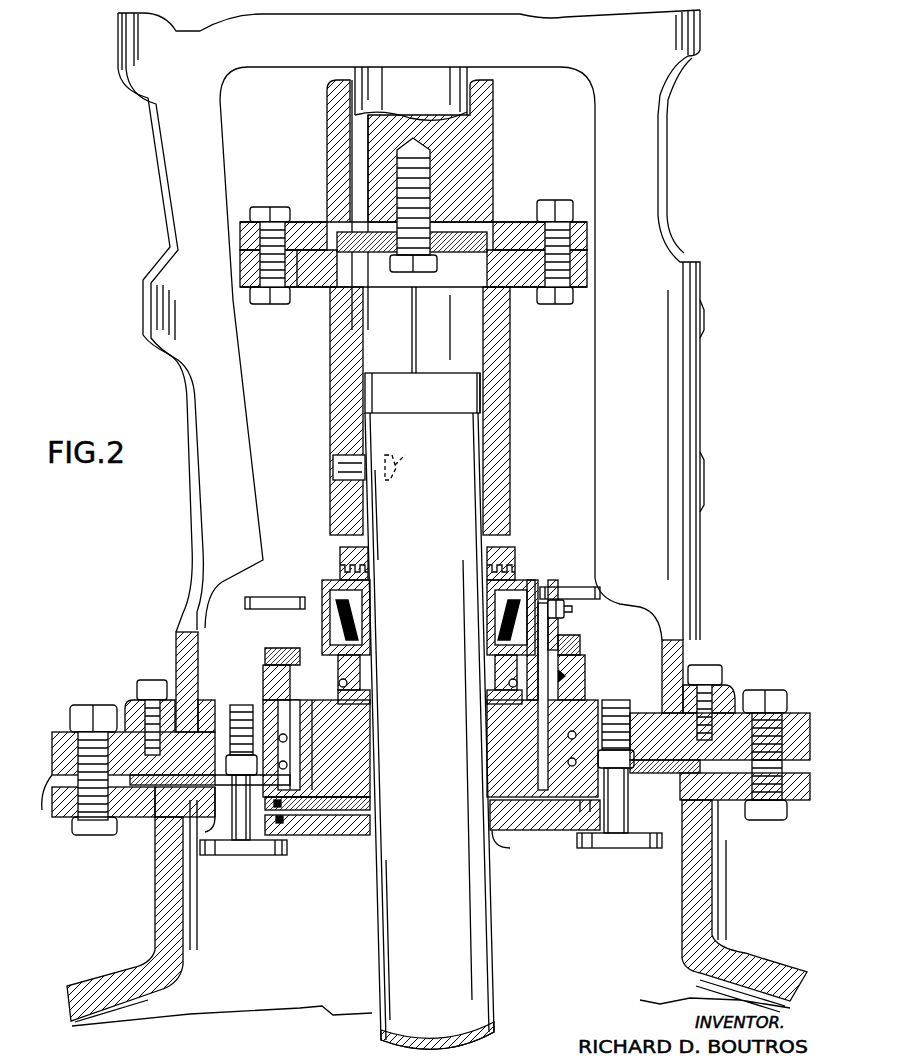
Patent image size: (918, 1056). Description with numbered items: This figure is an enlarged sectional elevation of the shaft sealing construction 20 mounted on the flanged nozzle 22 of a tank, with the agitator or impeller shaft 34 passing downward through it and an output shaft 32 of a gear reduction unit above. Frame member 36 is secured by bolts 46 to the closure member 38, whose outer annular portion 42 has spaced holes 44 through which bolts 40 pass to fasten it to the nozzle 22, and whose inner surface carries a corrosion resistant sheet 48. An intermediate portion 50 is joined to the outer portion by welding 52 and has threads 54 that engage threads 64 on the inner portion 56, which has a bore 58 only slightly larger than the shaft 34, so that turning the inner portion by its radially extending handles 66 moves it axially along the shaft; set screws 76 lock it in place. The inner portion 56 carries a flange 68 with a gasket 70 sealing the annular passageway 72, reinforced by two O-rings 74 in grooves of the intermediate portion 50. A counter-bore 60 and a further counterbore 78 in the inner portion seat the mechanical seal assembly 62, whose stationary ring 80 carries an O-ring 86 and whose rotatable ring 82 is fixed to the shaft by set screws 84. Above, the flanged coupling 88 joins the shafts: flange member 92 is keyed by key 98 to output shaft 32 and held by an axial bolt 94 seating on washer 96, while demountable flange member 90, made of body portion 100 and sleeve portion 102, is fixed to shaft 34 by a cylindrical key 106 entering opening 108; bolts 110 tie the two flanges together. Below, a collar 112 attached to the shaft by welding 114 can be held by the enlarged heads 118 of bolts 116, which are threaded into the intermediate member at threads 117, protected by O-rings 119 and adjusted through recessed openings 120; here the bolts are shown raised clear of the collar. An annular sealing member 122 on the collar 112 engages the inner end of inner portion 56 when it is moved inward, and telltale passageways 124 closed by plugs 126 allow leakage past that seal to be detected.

The seal construction 20 is at (670, 641).
The flanged nozzle 22 is at (712, 892).
The output shaft 32 is at (420, 75).
The agitator or impeller shaft 34 is at (488, 940).
The frame member 36 is at (676, 375).
The closure member 38 is at (810, 706).
The bolts 40 is at (93, 705).
The outer annular portion 42 is at (62, 732).
The spaced holes 44 is at (60, 817).
The bolts 46 is at (150, 680).
The sheet of corrosion resistant metal 48 is at (150, 805).
The intermediate portion 50 is at (272, 690).
The welding 52 is at (210, 732).
The threads 54 is at (585, 680).
The inner portion 56 is at (540, 584).
The bore 58 is at (495, 732).
The counter-bore 60 is at (536, 580).
The mechanical seal assembly 62 is at (337, 545).
The threads 64 is at (585, 662).
The radially extending handles 66 is at (275, 597).
The radially extending flange 68 is at (285, 822).
The annular sealing element or gasket 70 is at (285, 803).
The annular passageway 72 is at (292, 752).
The annular O-rings 74 is at (288, 738).
The set screws 76 is at (266, 656).
The counterbore 78 is at (345, 700).
The stationary ring 80 is at (362, 668).
The rotatable ring 82 is at (372, 625).
The set screws 84 is at (340, 565).
The O-ring 86 is at (348, 683).
The flanged coupling 88 is at (606, 231).
The flange member 90 is at (587, 265).
The flange member 92 is at (587, 222).
The axially extending bolt 94 is at (420, 272).
The annular plate or washer 96 is at (376, 252).
The key 98 is at (350, 128).
The main or body portion 100 is at (498, 380).
The semi-cylindrical or sleeve portion 102 is at (333, 370).
The radially extending cylindrical key 106 is at (335, 468).
The opening 108 is at (414, 456).
The bolts 110 is at (272, 207).
The shaft collar 112 is at (546, 830).
The welding 114 is at (496, 840).
The bolts 116 is at (238, 845).
The threads 117 is at (215, 790).
The enlarged circular head portions 118 is at (268, 855).
The O-ring 119 is at (638, 776).
The recessed openings 120 is at (240, 705).
The annular sealing member 122 is at (572, 832).
The passageways 124 is at (540, 752).
The plugs 126 is at (574, 609).